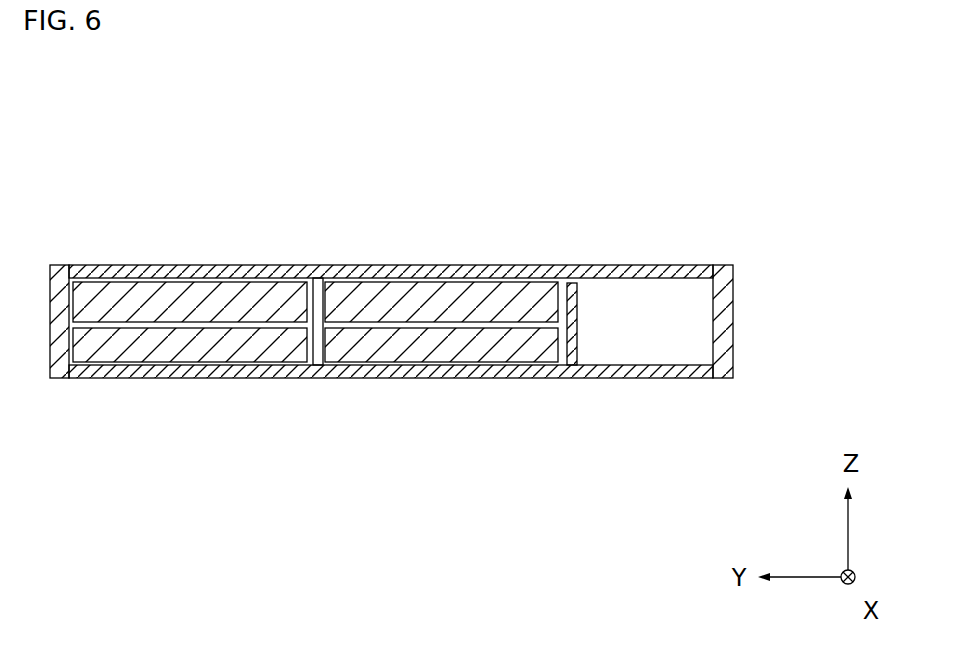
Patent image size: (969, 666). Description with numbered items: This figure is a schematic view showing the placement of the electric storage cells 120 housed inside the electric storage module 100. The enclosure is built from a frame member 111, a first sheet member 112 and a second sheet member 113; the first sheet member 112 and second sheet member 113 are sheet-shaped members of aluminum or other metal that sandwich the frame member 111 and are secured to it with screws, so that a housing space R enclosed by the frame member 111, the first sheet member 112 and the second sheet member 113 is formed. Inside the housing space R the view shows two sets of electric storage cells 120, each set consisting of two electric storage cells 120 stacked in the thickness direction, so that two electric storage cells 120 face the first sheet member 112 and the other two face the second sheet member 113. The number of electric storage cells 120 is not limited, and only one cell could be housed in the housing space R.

The battery module housing 100 is at (451, 280).
The frame member 111 is at (722, 318).
The first sheet member 112 is at (540, 263).
The second sheet member 113 is at (540, 379).
The electric storage cell 120 is at (191, 292).
The housing space R is at (316, 297).